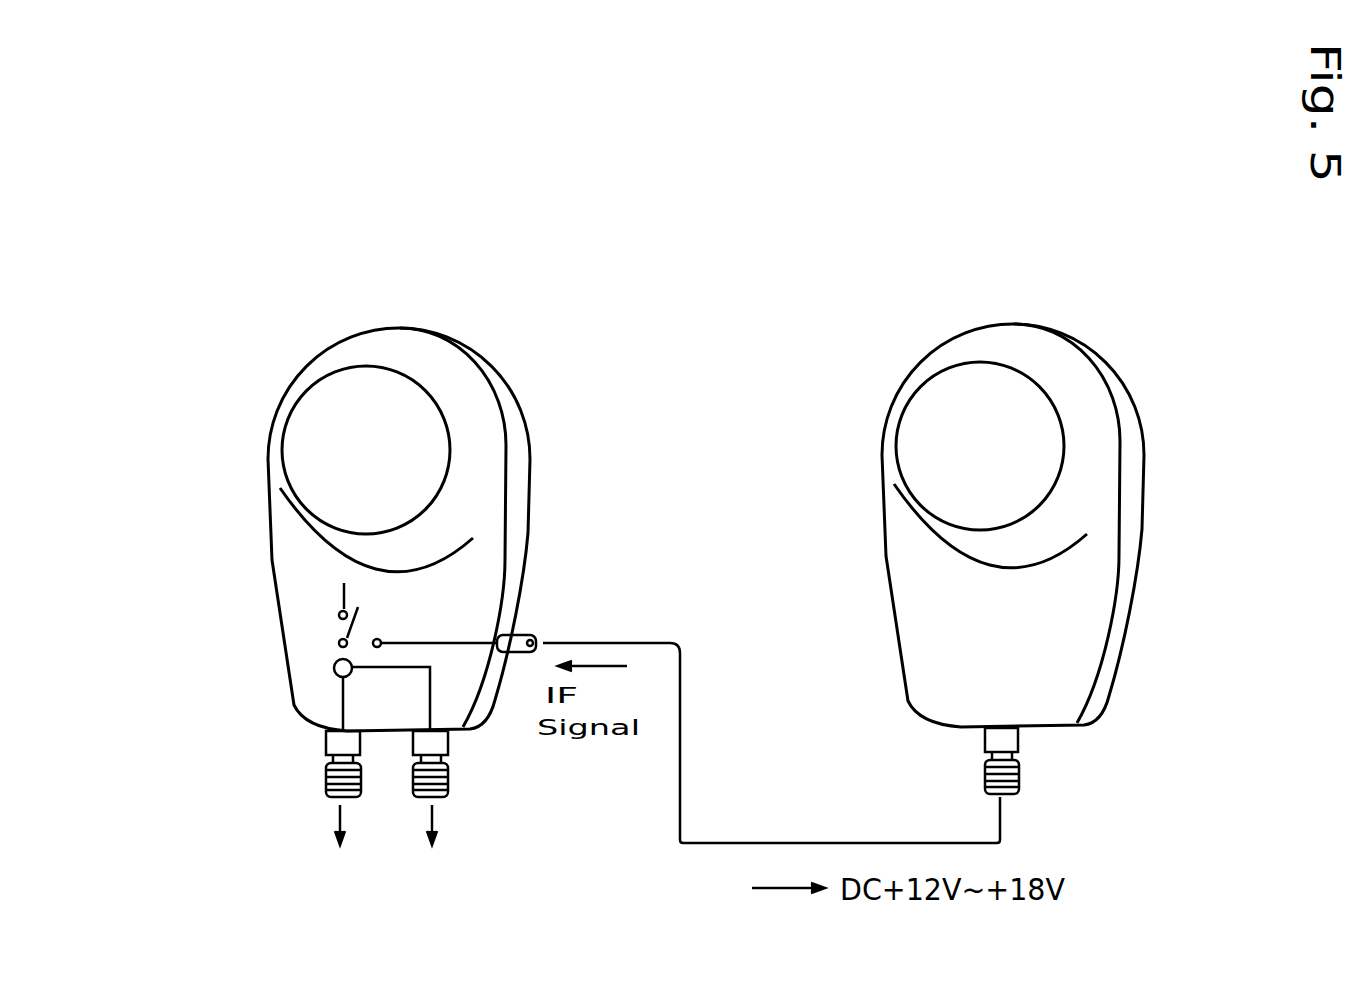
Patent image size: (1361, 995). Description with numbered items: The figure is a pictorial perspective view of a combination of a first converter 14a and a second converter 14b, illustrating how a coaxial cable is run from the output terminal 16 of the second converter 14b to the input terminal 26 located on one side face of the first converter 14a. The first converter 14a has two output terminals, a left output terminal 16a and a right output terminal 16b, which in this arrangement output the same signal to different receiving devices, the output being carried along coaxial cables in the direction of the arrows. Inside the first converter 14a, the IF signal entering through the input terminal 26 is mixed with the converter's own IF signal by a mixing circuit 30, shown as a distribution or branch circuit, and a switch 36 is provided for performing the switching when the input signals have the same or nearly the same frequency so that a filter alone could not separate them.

The first converter 14a is at (328, 343).
The second converter 14b is at (992, 320).
The output terminal 16 is at (1007, 795).
The left output terminal 16a is at (366, 787).
The right output terminal 16b is at (410, 790).
The input terminal 26 is at (528, 628).
The mixing circuit 30 is at (332, 680).
The switch 36 is at (337, 635).